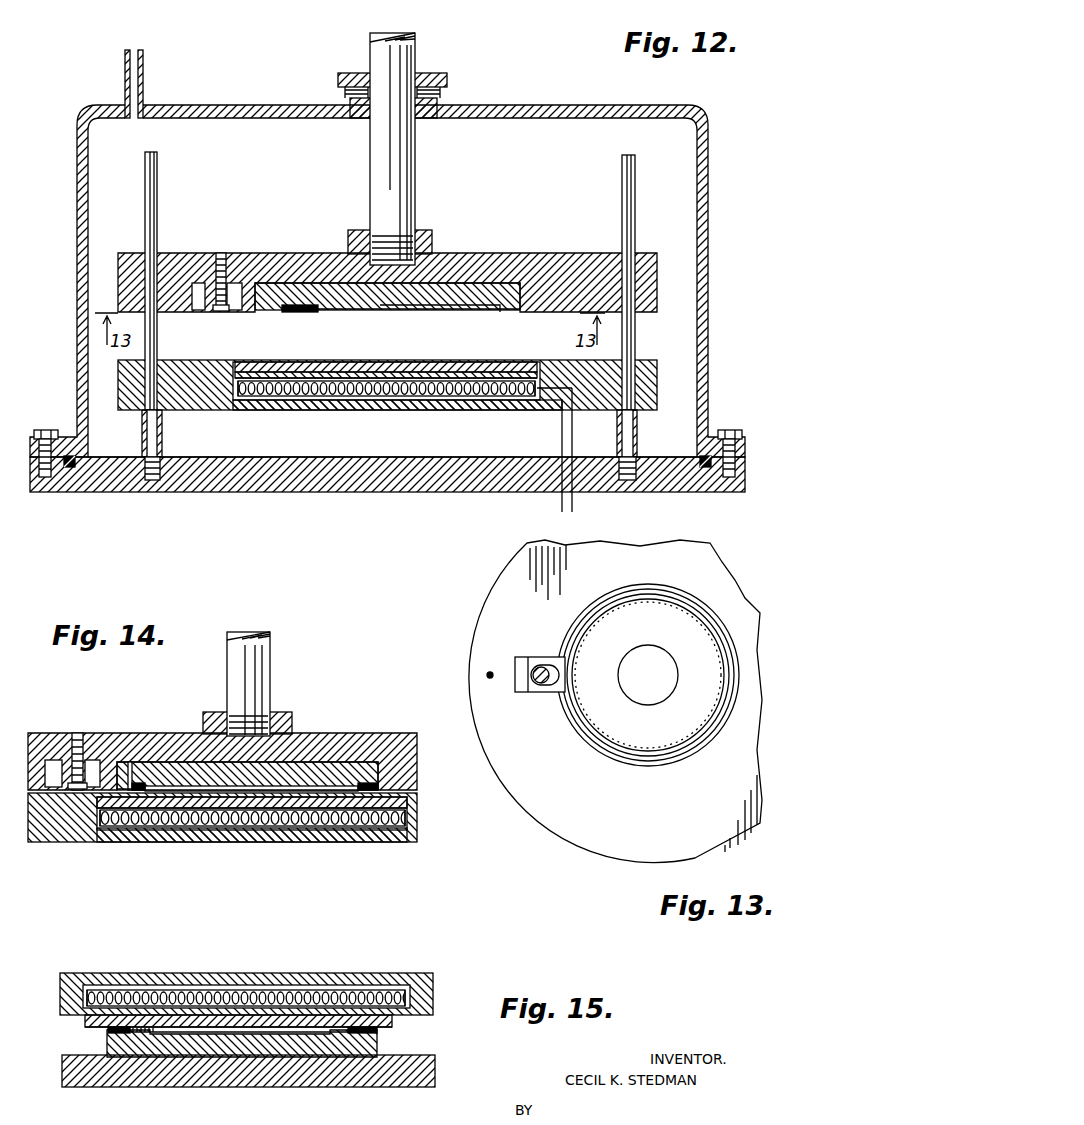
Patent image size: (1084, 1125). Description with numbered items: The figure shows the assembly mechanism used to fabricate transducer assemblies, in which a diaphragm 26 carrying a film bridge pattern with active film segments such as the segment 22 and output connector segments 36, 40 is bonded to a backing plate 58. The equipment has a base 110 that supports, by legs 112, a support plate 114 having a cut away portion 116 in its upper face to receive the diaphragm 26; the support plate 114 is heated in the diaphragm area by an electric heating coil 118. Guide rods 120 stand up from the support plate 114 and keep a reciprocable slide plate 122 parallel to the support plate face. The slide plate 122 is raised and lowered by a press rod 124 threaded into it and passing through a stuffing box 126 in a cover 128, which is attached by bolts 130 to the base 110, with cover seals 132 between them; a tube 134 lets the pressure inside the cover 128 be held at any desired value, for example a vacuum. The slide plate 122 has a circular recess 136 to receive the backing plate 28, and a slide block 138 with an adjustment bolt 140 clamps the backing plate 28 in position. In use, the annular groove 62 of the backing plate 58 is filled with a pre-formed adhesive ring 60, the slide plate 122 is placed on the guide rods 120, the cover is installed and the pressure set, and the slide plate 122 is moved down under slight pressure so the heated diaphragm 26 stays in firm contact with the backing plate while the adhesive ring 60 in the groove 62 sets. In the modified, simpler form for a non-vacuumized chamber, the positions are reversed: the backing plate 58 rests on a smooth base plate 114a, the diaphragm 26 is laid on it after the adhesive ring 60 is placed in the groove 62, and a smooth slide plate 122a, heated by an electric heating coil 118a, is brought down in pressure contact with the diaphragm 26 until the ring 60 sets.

In FIG. 12, the active film segment 22 is at (358, 364).
In FIG. 14, the active film segment 22 is at (328, 766).
In FIG. 15, the active film segment 22 is at (200, 1030).
In FIG. 12, the diaphragm 26 is at (305, 364).
In FIG. 14, the diaphragm 26 is at (250, 802).
In FIG. 15, the diaphragm 26 is at (307, 1022).
In FIG. 13, the backing plate 28 is at (660, 686).
In FIG. 12, the output connector segment 36 is at (504, 364).
In FIG. 14, the output connector segment 36 is at (362, 802).
In FIG. 15, the output connector segment 36 is at (150, 1058).
In FIG. 12, the output connector segment 40 is at (255, 366).
In FIG. 14, the output connector segment 40 is at (130, 802).
In FIG. 15, the output connector segment 40 is at (332, 1060).
In FIG. 12, the backing plate 58 is at (312, 310).
In FIG. 14, the backing plate 58 is at (166, 765).
In FIG. 15, the backing plate 58 is at (245, 1050).
In FIG. 14, the adhesive ring 60 is at (136, 784).
In FIG. 15, the adhesive ring 60 is at (115, 1058).
In FIG. 13, the groove 62 is at (618, 745).
In FIG. 14, the groove 62 is at (130, 790).
In FIG. 15, the groove 62 is at (110, 1032).
In FIG. 12, the base 110 is at (245, 480).
In FIG. 12, the legs 112 is at (162, 437).
In FIG. 12, the support plate 114 is at (222, 402).
In FIG. 14, the support plate 114 is at (150, 840).
In FIG. 15, the base plate 114a is at (185, 1080).
In FIG. 12, the cut away portion 116 is at (230, 372).
In FIG. 12, the electric heating coil 118 is at (384, 403).
In FIG. 14, the electric heating coil 118 is at (205, 822).
In FIG. 15, the electric heating coil 118a is at (220, 988).
In FIG. 12, the guide rods 120 is at (145, 182).
In FIG. 12, the slide plate 122 is at (278, 254).
In FIG. 13, the slide plate 122 is at (497, 597).
In FIG. 14, the slide plate 122 is at (191, 734).
In FIG. 15, the slide plate 122a is at (117, 975).
In FIG. 12, the press rod 124 is at (370, 160).
In FIG. 14, the press rod 124 is at (227, 660).
In FIG. 12, the stuffing box 126 is at (440, 104).
In FIG. 12, the cover 128 is at (228, 106).
In FIG. 12, the bolts 130 is at (44, 430).
In FIG. 12, the cover seals 132 is at (70, 470).
In FIG. 12, the tube 134 is at (125, 62).
In FIG. 12, the circular recess 136 is at (215, 268).
In FIG. 13, the circular recess 136 is at (557, 632).
In FIG. 13, the slide block 138 is at (540, 690).
In FIG. 14, the slide block 138 is at (88, 758).
In FIG. 13, the adjustment bolt 140 is at (535, 668).
In FIG. 14, the adjustment bolt 140 is at (65, 748).